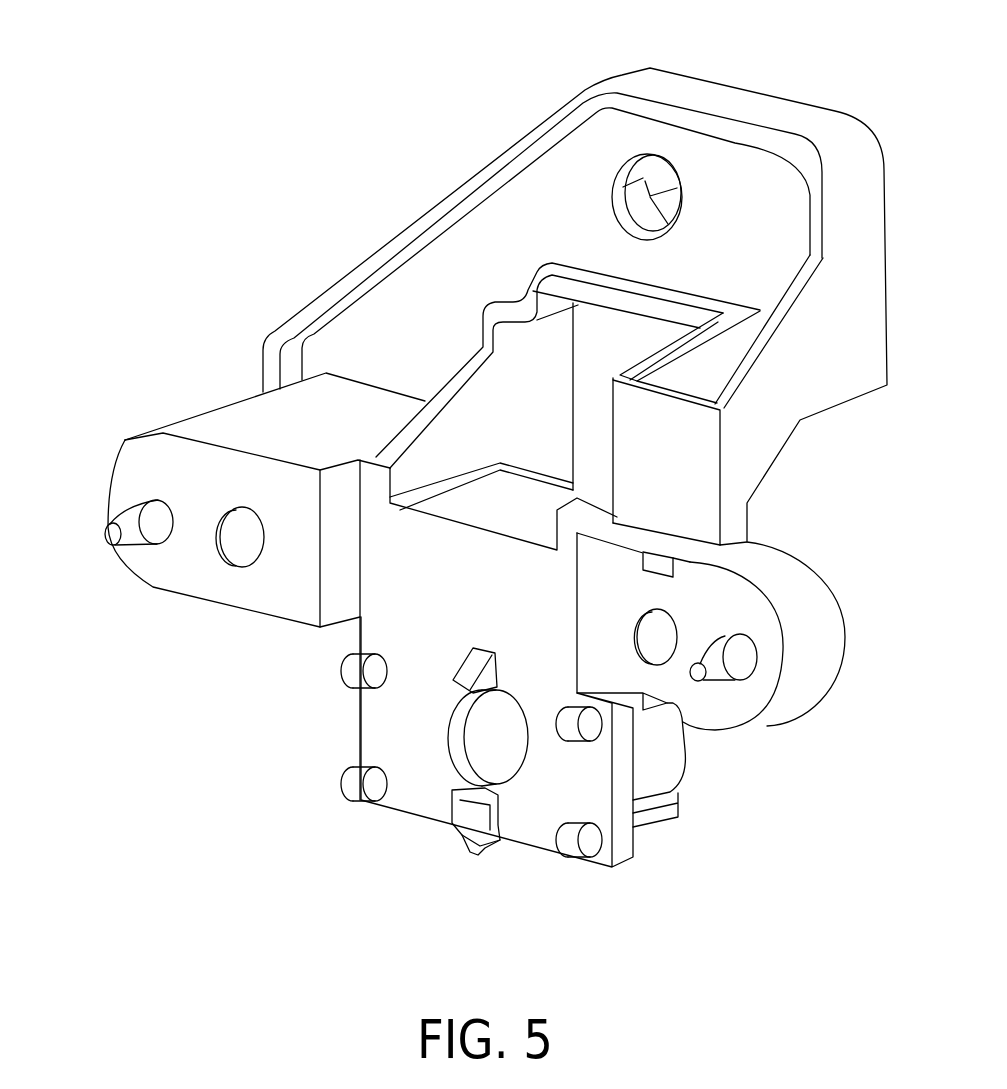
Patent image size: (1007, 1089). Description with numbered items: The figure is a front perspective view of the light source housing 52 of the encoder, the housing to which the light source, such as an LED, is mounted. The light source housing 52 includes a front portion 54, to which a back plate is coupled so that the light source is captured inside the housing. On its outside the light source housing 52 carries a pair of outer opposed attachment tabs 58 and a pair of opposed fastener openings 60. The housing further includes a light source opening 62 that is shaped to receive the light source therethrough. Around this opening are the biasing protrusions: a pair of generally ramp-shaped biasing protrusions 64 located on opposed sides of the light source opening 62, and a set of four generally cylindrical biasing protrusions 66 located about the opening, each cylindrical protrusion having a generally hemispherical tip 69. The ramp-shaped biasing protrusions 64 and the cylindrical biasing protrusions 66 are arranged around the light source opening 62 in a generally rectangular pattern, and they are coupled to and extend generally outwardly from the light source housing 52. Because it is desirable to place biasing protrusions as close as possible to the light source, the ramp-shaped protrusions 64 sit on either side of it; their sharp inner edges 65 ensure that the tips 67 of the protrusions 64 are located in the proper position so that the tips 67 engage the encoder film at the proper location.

The light source housing 52 is at (385, 118).
The front portion 54 is at (735, 150).
The outer opposed attachment tabs 58 is at (108, 548).
The opposed fastener openings 60 is at (243, 550).
The light source opening 62 is at (470, 752).
The ramp-shaped biasing protrusions 64 is at (480, 846).
The sharp inner edges 65 is at (530, 788).
The cylindrical biasing protrusions 66 is at (350, 766).
The tips 67 is at (452, 680).
The hemispherical tip 69 is at (341, 672).